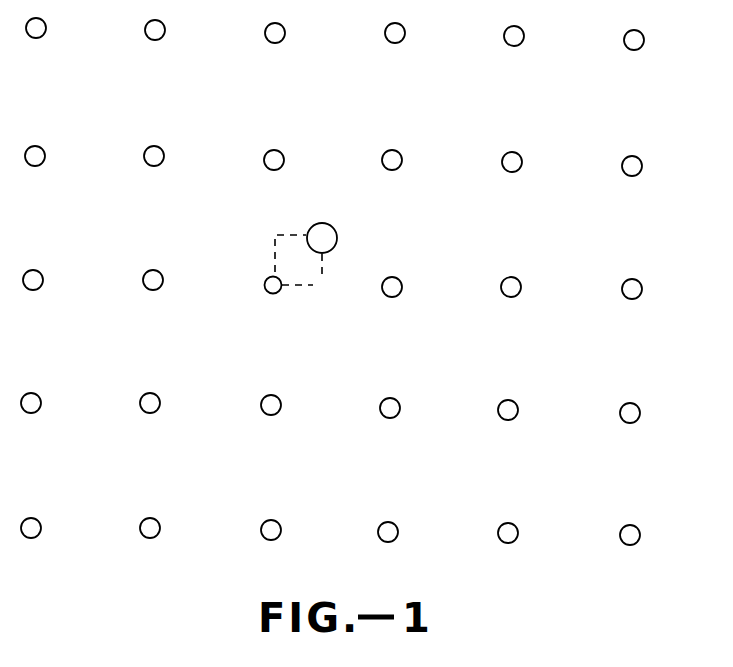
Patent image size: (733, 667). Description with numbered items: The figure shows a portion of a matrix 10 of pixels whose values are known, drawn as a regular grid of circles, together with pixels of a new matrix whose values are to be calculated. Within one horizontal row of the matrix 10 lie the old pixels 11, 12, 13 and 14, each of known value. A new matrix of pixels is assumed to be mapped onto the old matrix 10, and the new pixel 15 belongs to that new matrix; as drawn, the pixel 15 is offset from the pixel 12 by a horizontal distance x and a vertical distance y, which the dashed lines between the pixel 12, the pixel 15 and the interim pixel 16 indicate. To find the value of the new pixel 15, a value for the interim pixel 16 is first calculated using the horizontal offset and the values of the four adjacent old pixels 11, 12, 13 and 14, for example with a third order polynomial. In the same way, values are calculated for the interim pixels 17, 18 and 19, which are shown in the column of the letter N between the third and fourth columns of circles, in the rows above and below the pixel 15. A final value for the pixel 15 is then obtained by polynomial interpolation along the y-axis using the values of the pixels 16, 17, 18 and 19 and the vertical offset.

The matrix 10 is at (672, 88).
The pixel 11 is at (147, 273).
The pixel 12 is at (266, 291).
The pixel 13 is at (399, 294).
The pixel 14 is at (518, 294).
The new pixel 15 is at (337, 237).
The interim pixel 16 is at (335, 280).
The interim pixel 17 is at (330, 402).
The interim pixel 18 is at (332, 155).
The interim pixel 19 is at (333, 32).